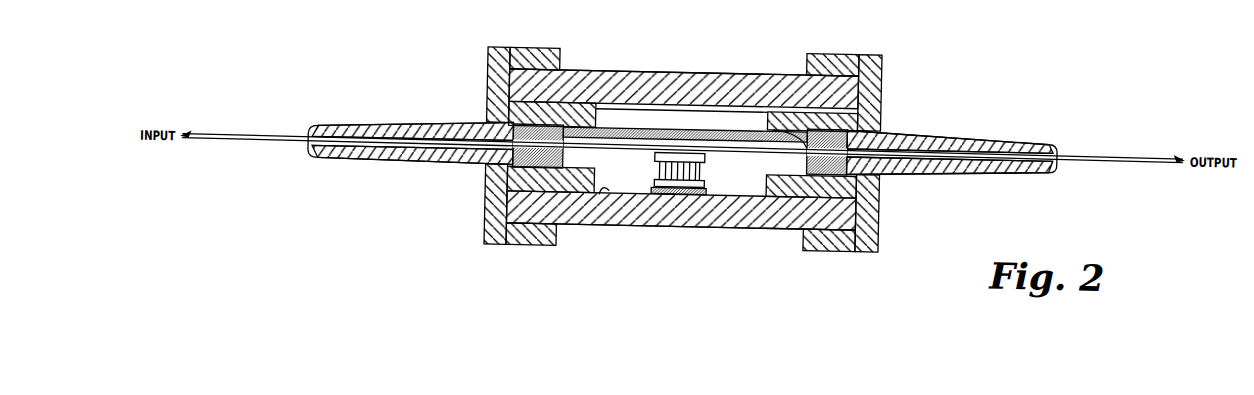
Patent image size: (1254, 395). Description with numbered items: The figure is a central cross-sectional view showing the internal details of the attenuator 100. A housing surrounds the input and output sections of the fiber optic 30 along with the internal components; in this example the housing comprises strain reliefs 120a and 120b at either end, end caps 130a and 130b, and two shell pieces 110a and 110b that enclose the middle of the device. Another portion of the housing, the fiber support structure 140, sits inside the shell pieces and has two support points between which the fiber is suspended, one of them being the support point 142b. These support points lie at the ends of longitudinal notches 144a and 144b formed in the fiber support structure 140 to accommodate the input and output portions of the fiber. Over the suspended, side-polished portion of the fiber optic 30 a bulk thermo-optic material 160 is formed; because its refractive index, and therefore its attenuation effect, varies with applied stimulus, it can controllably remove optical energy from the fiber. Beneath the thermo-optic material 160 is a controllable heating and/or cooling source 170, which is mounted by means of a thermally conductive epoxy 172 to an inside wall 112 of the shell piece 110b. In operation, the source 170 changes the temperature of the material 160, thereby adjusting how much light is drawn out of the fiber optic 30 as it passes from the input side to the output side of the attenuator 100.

The attenuator 100 is at (1032, 75).
The shell piece 110a is at (770, 90).
The shell piece 110b is at (776, 210).
The inside wall 112 is at (600, 196).
The strain relief 120a is at (402, 138).
The strain relief 120b is at (950, 137).
The end cap 130a is at (522, 60).
The end cap 130b is at (840, 74).
The fiber support structure 140 is at (617, 126).
The support point 142b is at (805, 160).
The longitudinal notch 144a is at (538, 171).
The longitudinal notch 144b is at (830, 176).
The thermo-optic material 160 is at (680, 153).
The heating/cooling source 170 is at (707, 185).
The thermally conductive epoxy 172 is at (650, 190).
The fiber optic 30 is at (1112, 150).